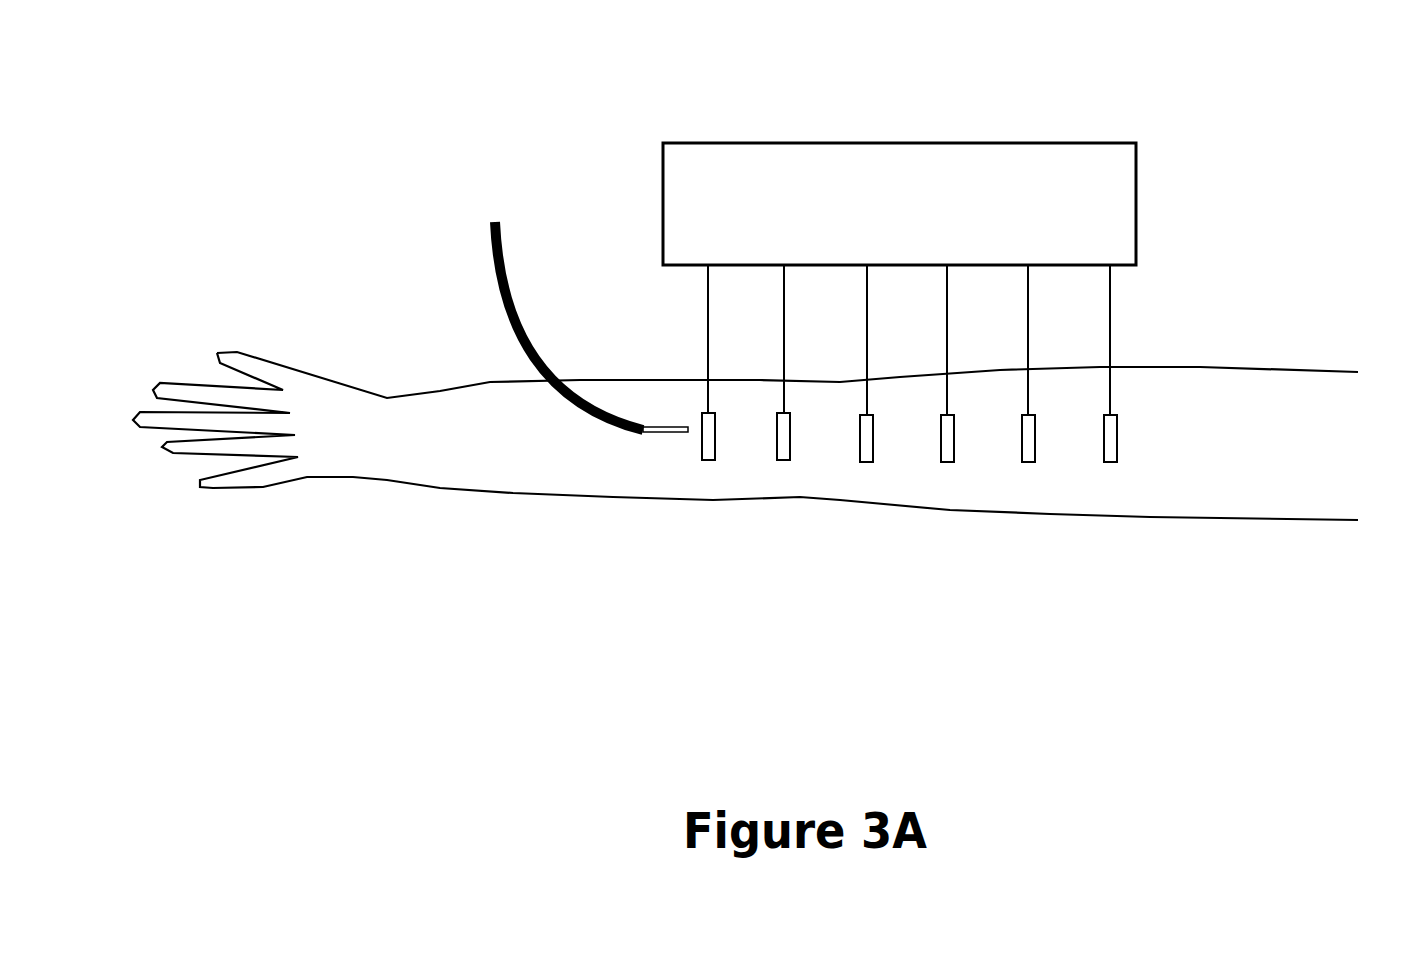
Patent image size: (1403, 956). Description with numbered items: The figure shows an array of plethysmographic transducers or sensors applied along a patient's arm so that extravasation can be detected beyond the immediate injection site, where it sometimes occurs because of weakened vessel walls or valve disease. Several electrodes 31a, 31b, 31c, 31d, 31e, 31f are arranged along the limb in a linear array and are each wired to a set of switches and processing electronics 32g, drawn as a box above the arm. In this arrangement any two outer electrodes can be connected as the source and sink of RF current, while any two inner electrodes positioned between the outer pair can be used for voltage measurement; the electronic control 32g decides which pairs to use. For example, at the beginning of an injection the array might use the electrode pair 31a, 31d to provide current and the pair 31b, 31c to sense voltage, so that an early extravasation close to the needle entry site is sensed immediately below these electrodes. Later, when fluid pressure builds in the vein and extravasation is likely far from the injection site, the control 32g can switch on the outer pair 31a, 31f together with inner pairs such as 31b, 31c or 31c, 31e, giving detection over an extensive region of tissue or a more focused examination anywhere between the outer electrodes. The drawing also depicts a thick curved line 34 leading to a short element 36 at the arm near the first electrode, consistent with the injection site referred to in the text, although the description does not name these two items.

The switches and processing electronics 32g is at (660, 177).
The fluid tubing 34 is at (522, 322).
The needle / catheter 36 is at (662, 436).
The electrode 31a is at (702, 452).
The electrode 31b is at (777, 443).
The electrode 31c is at (860, 435).
The electrode 31d is at (954, 443).
The electrode 31e is at (1035, 443).
The electrode 31f is at (1117, 440).